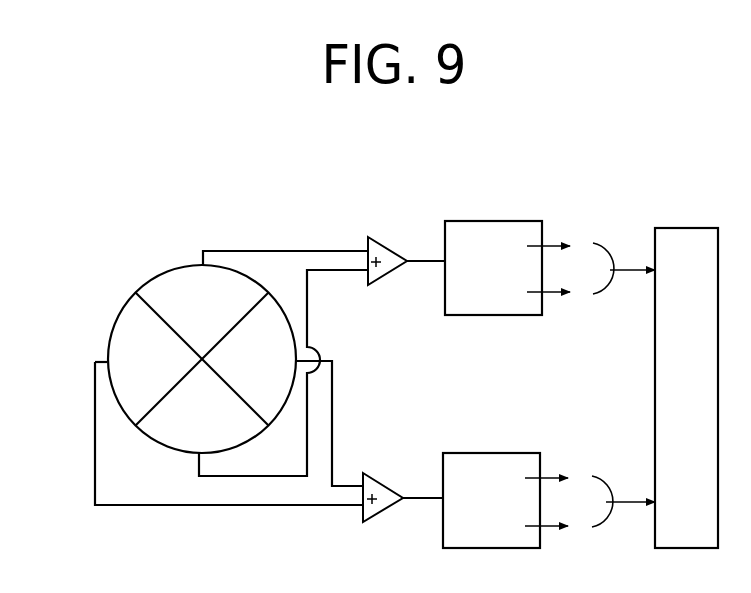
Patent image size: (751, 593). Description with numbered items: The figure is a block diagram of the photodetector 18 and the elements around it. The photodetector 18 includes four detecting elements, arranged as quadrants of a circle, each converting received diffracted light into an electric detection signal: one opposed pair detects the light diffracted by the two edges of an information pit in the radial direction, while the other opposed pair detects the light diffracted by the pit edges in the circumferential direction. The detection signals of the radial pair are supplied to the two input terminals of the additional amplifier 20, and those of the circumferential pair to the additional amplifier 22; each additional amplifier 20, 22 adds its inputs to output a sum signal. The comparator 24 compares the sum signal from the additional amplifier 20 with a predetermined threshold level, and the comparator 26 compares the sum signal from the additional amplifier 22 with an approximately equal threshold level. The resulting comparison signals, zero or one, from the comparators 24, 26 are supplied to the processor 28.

The photodetector 18 is at (143, 258).
The additional amplifier 20 is at (387, 238).
The additional amplifier 22 is at (376, 472).
The comparator 24 is at (503, 220).
The comparator 26 is at (507, 454).
The processor 28 is at (677, 228).